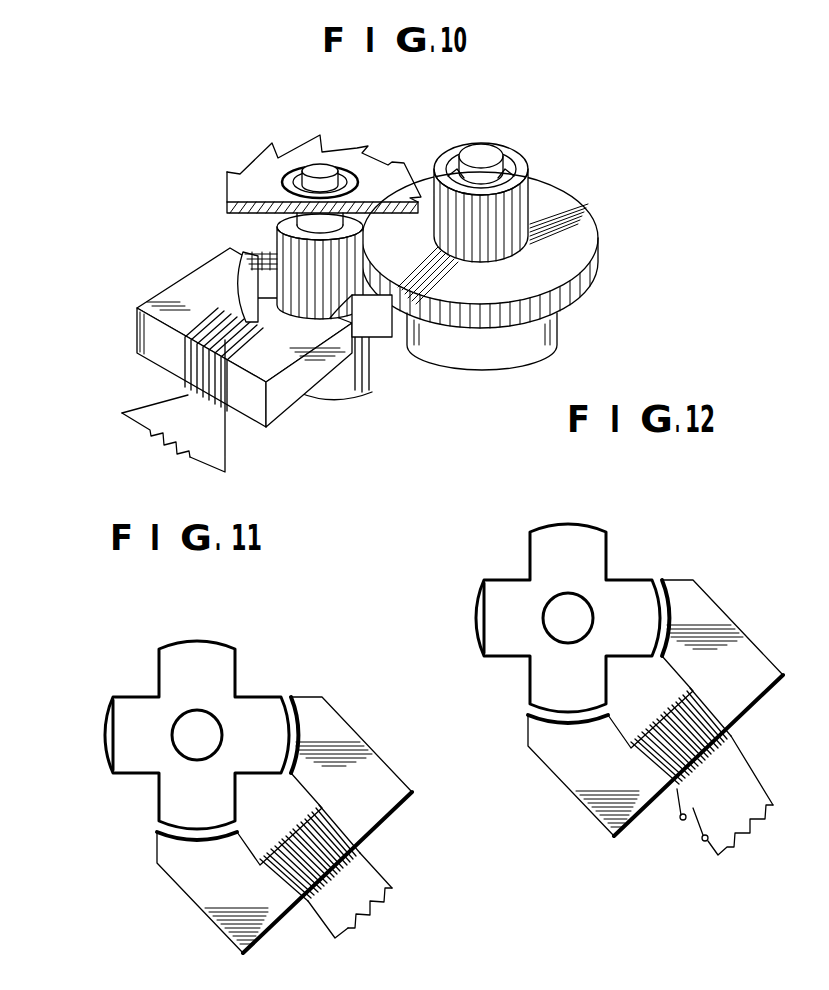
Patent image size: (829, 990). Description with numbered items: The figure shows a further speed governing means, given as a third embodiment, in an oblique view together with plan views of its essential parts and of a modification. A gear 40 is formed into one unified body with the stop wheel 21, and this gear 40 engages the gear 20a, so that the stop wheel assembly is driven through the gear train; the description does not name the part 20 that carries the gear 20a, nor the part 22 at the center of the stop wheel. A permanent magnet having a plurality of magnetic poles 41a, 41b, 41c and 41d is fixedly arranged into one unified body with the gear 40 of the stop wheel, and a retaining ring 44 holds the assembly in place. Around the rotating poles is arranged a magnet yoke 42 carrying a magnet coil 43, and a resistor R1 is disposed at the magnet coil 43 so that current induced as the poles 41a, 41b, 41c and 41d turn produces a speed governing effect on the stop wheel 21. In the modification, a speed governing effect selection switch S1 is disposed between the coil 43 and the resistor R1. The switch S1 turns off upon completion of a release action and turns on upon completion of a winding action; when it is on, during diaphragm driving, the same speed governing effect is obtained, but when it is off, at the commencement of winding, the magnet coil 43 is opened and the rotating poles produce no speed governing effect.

In FIG. 10, the rotor 20 is at (525, 168).
In FIG. 10, the gear 20a is at (553, 197).
In FIG. 10, the stop wheel 21 is at (263, 177).
In FIG. 10, the shaft 22 is at (312, 172).
In FIG. 11, the shaft 22 is at (208, 718).
In FIG. 12, the shaft 22 is at (592, 580).
In FIG. 10, the gear 40 is at (282, 217).
In FIG. 10, the magnetic pole 41a is at (242, 252).
In FIG. 11, the magnetic pole 41a is at (165, 803).
In FIG. 12, the magnetic pole 41a is at (539, 701).
In FIG. 10, the magnetic pole 41b is at (373, 390).
In FIG. 11, the magnetic pole 41b is at (263, 703).
In FIG. 12, the magnetic pole 41b is at (659, 597).
In FIG. 10, the magnetic pole 41c is at (395, 333).
In FIG. 11, the magnetic pole 41c is at (177, 650).
In FIG. 12, the magnetic pole 41c is at (568, 592).
In FIG. 11, the magnetic pole 41d is at (128, 705).
In FIG. 12, the magnetic pole 41d is at (491, 590).
In FIG. 10, the magnet yoke 42 is at (288, 400).
In FIG. 11, the magnet yoke 42 is at (380, 782).
In FIG. 12, the magnet yoke 42 is at (655, 701).
In FIG. 10, the magnet coil 43 is at (180, 380).
In FIG. 11, the magnet coil 43 is at (370, 862).
In FIG. 12, the magnet coil 43 is at (702, 746).
In FIG. 10, the retaining ring 44 is at (502, 172).
In FIG. 10, the resistor R1 is at (158, 443).
In FIG. 11, the resistor R1 is at (373, 918).
In FIG. 12, the resistor R1 is at (757, 830).
In FIG. 12, the speed governing effect selection switch S1 is at (697, 823).